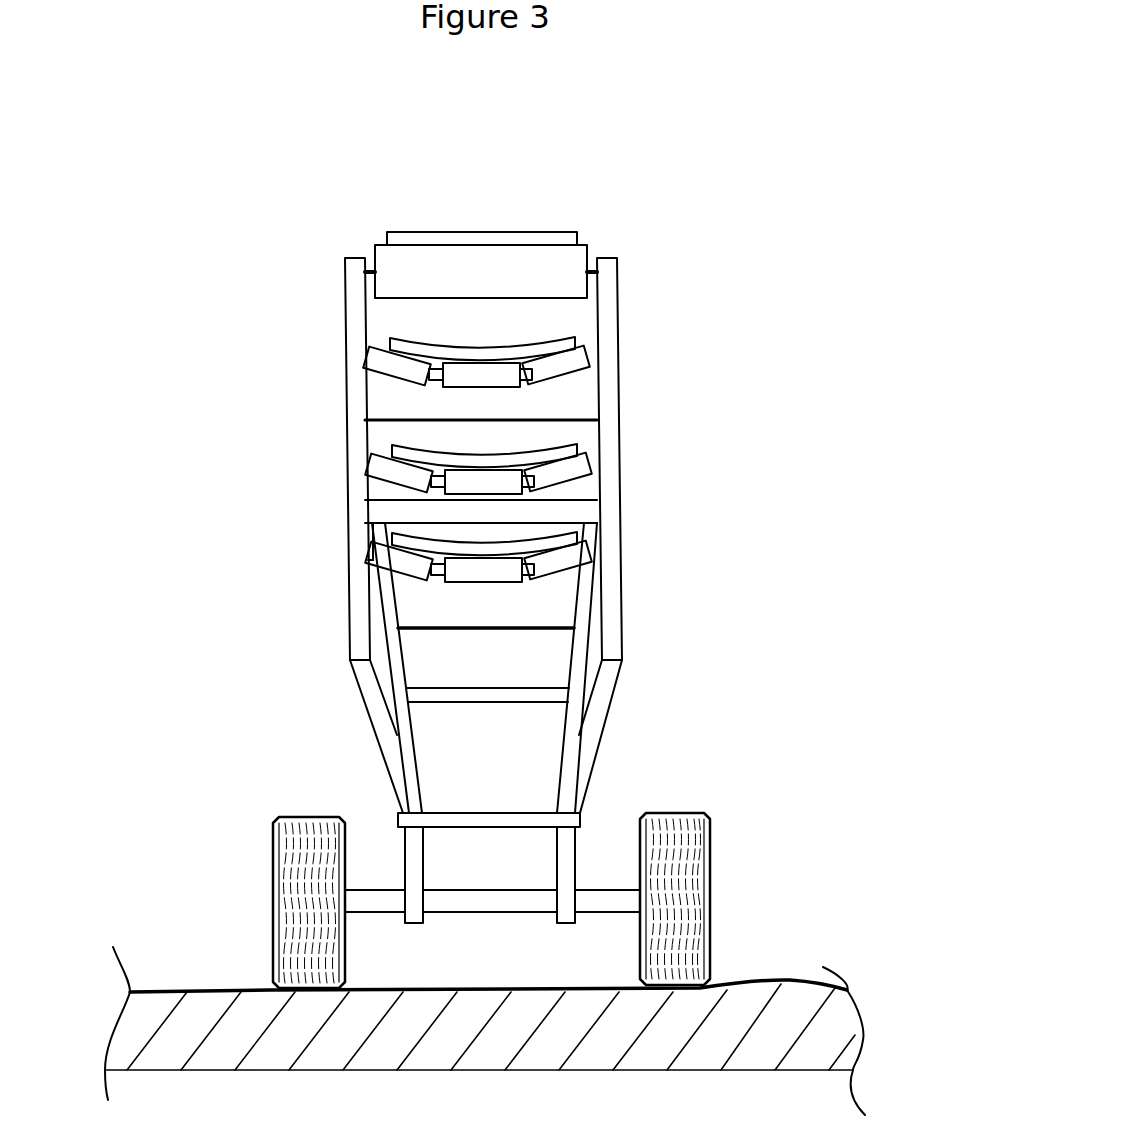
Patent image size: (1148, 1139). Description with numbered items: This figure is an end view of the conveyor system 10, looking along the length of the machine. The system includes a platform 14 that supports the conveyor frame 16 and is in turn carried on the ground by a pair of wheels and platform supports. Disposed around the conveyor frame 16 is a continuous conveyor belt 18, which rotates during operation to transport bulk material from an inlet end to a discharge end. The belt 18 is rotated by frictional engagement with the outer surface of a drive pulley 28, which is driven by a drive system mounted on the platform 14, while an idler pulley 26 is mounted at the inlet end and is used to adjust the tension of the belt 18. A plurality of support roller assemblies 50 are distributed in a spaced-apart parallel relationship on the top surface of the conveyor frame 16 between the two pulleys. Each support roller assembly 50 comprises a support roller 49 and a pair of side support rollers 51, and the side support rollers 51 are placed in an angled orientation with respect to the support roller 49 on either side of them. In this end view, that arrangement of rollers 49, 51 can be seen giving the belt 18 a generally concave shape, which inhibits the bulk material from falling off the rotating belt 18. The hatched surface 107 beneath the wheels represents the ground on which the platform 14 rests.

The conveyor system 10 is at (190, 570).
The platform 14 is at (596, 809).
The conveyor frame 16 is at (335, 353).
The conveyor belt 18 is at (410, 234).
The idler pulley 26 is at (533, 628).
The drive pulley 28 is at (590, 248).
The support roller 49 is at (500, 380).
The support roller assembly 50 is at (425, 406).
The side support roller 51 is at (582, 356).
The ground surface 107 is at (760, 978).